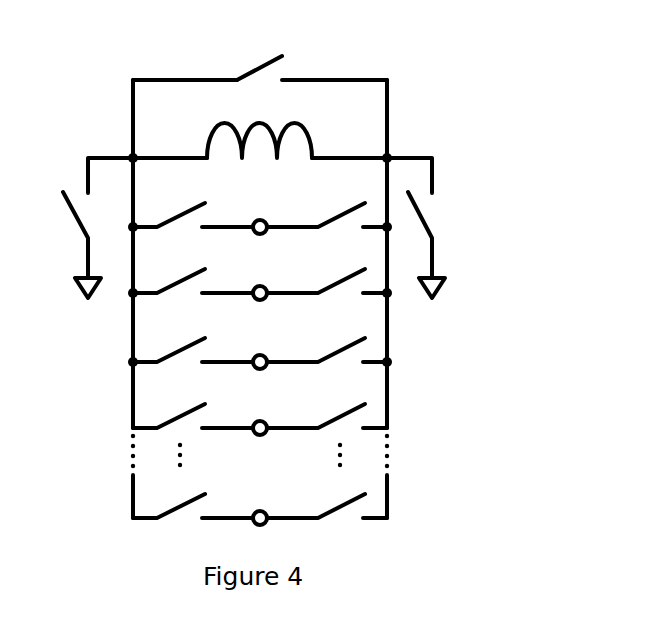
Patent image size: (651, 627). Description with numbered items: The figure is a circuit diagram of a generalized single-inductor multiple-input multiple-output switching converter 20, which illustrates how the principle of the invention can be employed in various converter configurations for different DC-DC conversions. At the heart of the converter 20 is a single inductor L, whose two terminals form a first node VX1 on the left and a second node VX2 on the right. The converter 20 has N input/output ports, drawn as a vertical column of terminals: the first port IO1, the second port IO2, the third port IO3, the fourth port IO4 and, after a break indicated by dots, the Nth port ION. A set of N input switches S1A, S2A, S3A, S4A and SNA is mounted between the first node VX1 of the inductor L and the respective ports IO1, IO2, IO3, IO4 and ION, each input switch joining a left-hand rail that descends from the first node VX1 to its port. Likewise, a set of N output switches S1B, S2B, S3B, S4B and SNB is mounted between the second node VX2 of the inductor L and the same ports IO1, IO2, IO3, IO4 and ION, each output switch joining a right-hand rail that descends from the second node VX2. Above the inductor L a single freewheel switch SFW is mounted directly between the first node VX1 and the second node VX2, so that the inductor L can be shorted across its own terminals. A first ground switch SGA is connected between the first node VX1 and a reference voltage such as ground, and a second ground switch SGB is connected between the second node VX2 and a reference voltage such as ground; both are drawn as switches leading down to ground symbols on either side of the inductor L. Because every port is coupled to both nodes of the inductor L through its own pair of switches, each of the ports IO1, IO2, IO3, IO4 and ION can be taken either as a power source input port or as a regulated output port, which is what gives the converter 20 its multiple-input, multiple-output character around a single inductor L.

The SI-MIMO converter 20 is at (313, 275).
The freewheel switch SFW is at (259, 53).
The inductor L is at (259, 122).
The first node VX1 is at (109, 145).
The second node VX2 is at (408, 145).
The first ground switch SGA is at (79, 228).
The second ground switch SGB is at (428, 228).
The input switch S1A is at (190, 207).
The input switch S2A is at (190, 273).
The input switch S3A is at (190, 342).
The input switch S4A is at (193, 406).
The input switch SNA is at (193, 495).
The output switch S1B is at (329, 207).
The output switch S2B is at (329, 273).
The output switch S3B is at (329, 342).
The output switch S4B is at (327, 406).
The output switch SNB is at (327, 496).
The I/O port IO1 is at (253, 214).
The I/O port IO2 is at (253, 280).
The I/O port IO3 is at (253, 349).
The I/O port IO4 is at (253, 415).
The I/O port ION is at (254, 505).